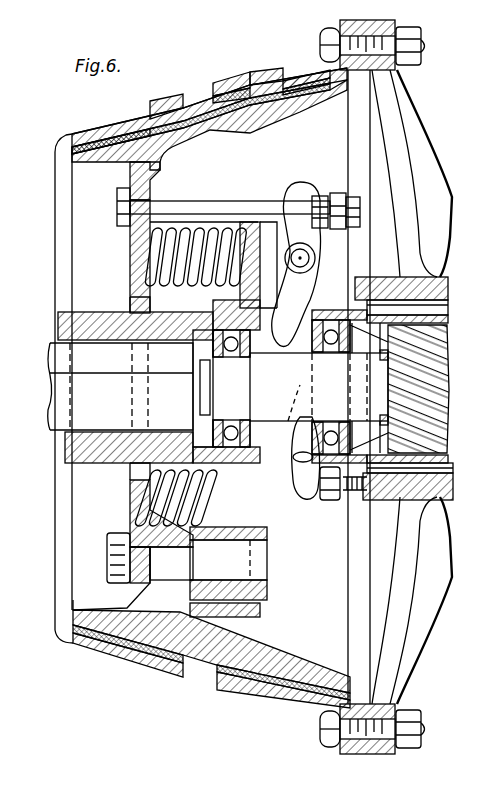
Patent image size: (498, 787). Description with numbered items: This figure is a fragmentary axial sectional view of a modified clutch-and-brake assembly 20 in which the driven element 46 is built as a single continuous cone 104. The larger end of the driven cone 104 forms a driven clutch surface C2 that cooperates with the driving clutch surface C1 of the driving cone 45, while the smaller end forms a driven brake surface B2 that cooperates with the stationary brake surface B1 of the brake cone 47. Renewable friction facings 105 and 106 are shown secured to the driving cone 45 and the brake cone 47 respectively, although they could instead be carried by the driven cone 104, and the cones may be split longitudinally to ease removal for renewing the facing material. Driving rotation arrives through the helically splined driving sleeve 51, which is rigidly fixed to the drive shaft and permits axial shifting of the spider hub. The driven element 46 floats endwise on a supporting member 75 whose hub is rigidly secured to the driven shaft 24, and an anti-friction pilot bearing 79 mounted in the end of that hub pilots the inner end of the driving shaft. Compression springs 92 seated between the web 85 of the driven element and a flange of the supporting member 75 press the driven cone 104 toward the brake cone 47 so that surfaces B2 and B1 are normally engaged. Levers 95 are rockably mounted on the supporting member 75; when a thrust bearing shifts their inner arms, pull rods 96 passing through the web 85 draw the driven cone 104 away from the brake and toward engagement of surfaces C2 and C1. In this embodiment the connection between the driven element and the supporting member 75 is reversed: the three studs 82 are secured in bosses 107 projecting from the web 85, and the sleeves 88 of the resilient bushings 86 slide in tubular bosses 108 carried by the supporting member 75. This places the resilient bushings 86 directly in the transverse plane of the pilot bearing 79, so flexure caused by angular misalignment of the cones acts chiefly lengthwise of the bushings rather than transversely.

The clutch assembly 20 is at (192, 65).
The driven shaft 24 is at (48, 362).
The driving cone 45 is at (258, 80).
The driven element 46 is at (130, 196).
The brake cone 47 is at (104, 128).
The driving sleeve 51 is at (448, 390).
The supporting member 75 is at (98, 303).
The anti-friction pilot bearing 79 is at (213, 428).
The studs 82 is at (137, 570).
The web 85 is at (130, 258).
The resilient bushings 86 is at (268, 590).
The sleeves 88 is at (240, 614).
The compression springs 92 is at (198, 288).
The levers 95 is at (292, 340).
The pull rods 96 is at (248, 206).
The driven cone 104 is at (262, 130).
The friction facing 105 is at (262, 108).
The friction facing 106 is at (165, 158).
The bosses 107 is at (160, 525).
The tubular bosses 108 is at (228, 636).
The stationary brake surface B1 is at (166, 108).
The driven brake surface B2 is at (78, 148).
The driving clutch surface C1 is at (306, 76).
The driven clutch surface C2 is at (222, 90).